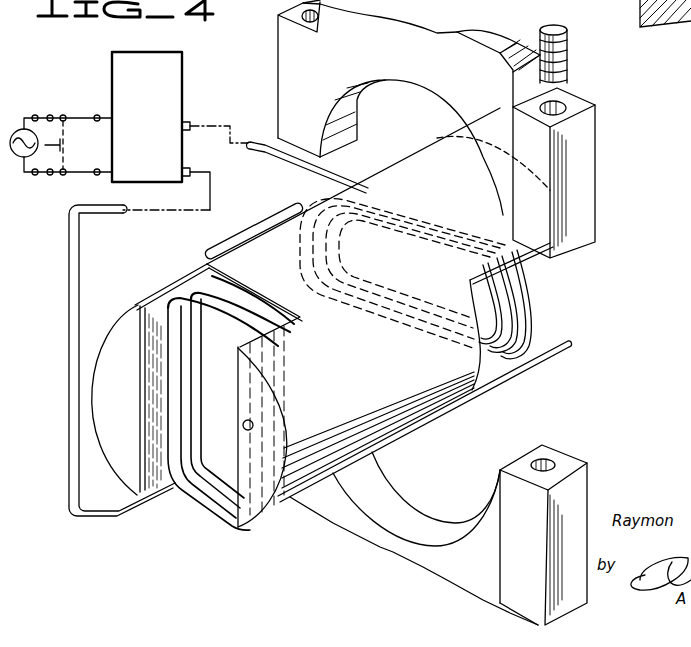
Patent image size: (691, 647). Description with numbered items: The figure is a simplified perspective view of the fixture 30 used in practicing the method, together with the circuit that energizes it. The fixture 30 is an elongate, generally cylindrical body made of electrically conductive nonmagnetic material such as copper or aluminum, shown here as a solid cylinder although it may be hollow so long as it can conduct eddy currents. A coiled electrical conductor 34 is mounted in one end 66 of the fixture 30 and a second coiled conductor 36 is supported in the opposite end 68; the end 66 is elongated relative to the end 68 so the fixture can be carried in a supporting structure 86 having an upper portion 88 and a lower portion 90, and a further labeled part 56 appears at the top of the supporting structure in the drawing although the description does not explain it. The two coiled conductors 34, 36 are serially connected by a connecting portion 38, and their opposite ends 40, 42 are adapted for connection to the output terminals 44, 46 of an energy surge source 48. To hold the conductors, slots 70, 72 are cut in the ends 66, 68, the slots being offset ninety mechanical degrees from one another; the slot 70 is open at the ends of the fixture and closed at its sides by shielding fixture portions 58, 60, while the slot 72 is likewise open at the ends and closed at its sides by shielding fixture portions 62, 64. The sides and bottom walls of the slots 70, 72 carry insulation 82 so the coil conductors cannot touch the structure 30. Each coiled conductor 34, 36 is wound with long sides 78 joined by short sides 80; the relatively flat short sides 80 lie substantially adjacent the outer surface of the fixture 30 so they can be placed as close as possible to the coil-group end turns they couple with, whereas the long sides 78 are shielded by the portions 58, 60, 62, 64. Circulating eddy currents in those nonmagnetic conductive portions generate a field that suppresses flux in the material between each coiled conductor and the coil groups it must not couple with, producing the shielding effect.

The fixture 30 is at (361, 351).
The coiled electrical conductor 34 is at (458, 234).
The second coiled conductor 36 is at (294, 336).
The connecting portion 38 is at (241, 232).
The end of coil conductor 40 is at (263, 148).
The end of coil conductor 42 is at (108, 214).
The output terminal 44 is at (191, 124).
The output terminal 46 is at (191, 170).
The energy surge source 48 is at (188, 73).
The upper clamp block with bolt 56 is at (435, 107).
The shielding fixture portion 58 is at (432, 164).
The shielding fixture portion 60 is at (533, 368).
The shielding fixture portion 62 is at (118, 330).
The shielding fixture portion 64 is at (383, 388).
The end of fixture 66 is at (573, 341).
The end of fixture 68 is at (233, 531).
The slot 70 is at (538, 337).
The slot 72 is at (138, 462).
The long sides 78 is at (173, 397).
The short sides 80 is at (229, 320).
The insulation 82 is at (162, 291).
The supporting structure 86 is at (600, 189).
The upper portion 88 is at (583, 157).
The lower portion 90 is at (577, 491).